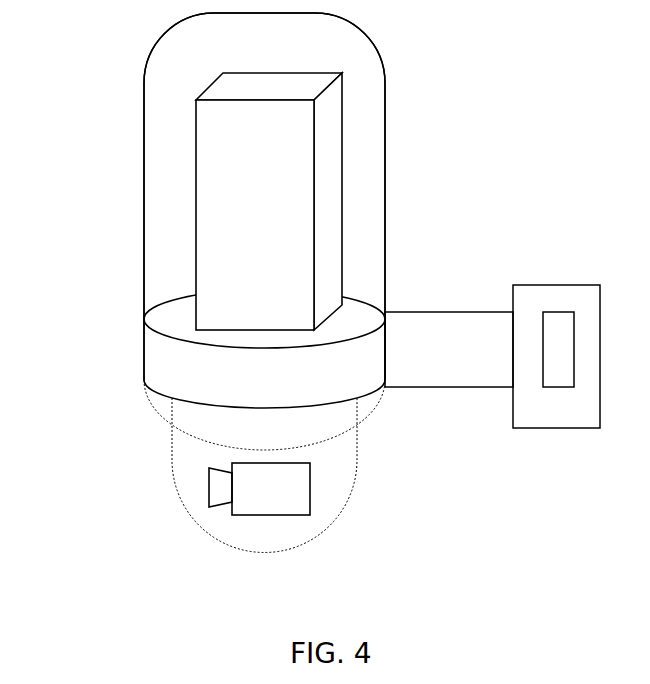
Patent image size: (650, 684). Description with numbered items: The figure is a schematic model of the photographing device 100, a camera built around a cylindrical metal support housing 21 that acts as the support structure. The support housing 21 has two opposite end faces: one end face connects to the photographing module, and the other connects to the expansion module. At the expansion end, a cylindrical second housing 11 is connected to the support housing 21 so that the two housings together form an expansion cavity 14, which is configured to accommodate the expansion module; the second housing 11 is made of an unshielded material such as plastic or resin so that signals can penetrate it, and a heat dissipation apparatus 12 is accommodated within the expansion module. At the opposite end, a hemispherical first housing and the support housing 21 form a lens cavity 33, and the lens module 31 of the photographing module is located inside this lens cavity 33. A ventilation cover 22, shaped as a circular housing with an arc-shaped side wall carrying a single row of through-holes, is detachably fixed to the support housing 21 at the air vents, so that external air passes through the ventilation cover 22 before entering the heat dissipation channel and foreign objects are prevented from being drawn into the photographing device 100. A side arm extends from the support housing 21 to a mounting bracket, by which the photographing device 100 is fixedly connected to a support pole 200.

The photographing device 100 is at (503, 77).
The second housing 11 is at (390, 130).
The expansion cavity 14 is at (180, 92).
The heat dissipation apparatus 12 is at (226, 235).
The support housing 21 is at (165, 370).
The ventilation cover 22 is at (180, 412).
The lens module 31 is at (253, 502).
The lens cavity 33 is at (330, 493).
The support pole 200 is at (538, 310).